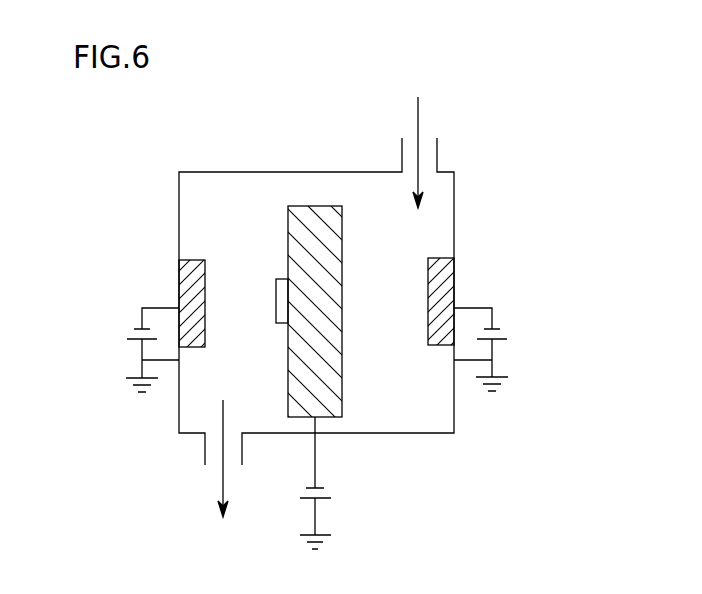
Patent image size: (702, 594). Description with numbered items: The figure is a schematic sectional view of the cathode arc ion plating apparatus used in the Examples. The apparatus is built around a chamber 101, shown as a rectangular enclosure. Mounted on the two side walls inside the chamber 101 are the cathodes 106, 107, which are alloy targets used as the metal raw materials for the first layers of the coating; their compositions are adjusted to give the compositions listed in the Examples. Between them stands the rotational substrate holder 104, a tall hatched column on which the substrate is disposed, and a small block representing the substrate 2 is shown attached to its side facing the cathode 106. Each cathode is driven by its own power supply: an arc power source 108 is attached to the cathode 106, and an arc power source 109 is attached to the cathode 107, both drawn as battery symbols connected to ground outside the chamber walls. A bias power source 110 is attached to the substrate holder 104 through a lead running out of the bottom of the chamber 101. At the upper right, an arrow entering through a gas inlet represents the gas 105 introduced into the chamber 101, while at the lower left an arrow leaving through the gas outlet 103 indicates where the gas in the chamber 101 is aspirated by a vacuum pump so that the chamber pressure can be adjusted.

The substrate 2 is at (275, 285).
The chamber 101 is at (232, 171).
The gas outlet 103 is at (244, 458).
The rotational substrate holder 104 is at (313, 205).
The gas 105 is at (419, 141).
The cathode 106 is at (186, 260).
The cathode 107 is at (445, 258).
The arc power source 108 is at (160, 308).
The arc power source 109 is at (473, 308).
The bias power source 110 is at (317, 458).